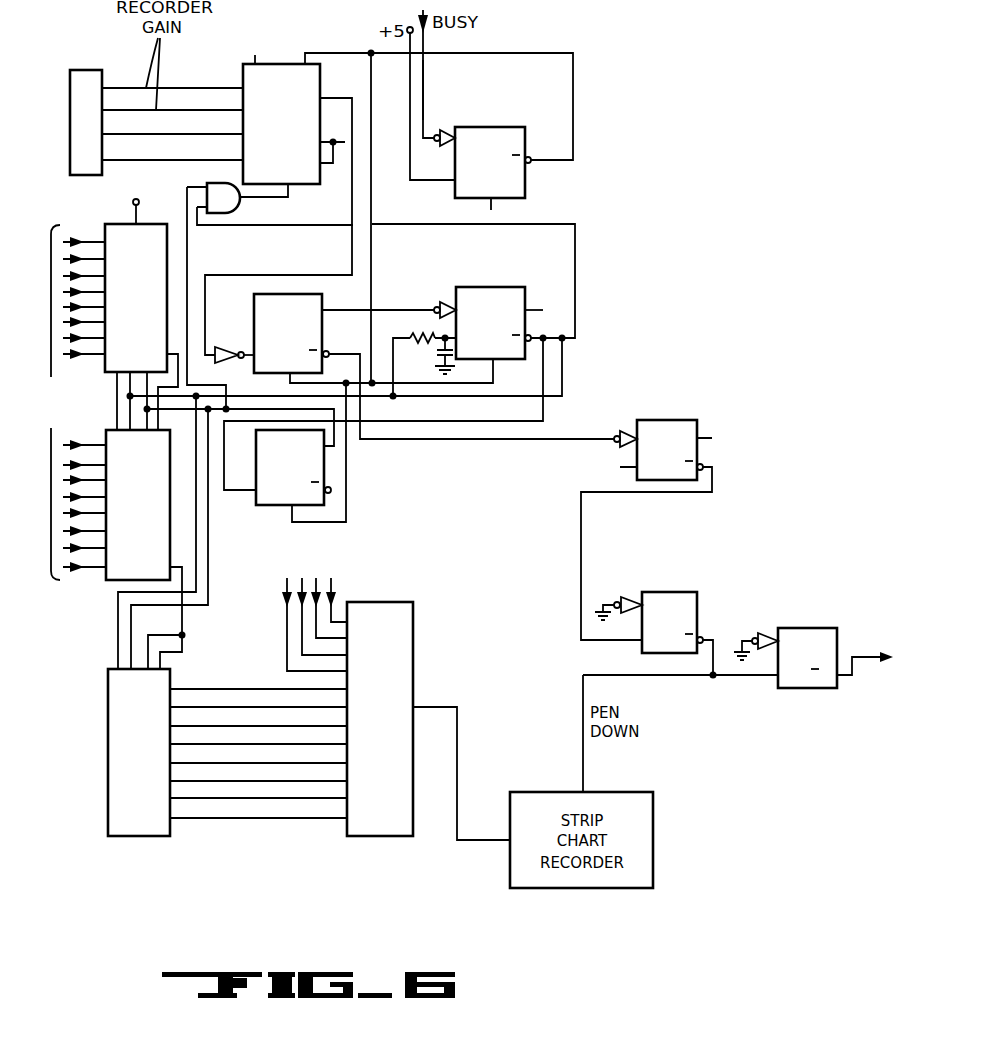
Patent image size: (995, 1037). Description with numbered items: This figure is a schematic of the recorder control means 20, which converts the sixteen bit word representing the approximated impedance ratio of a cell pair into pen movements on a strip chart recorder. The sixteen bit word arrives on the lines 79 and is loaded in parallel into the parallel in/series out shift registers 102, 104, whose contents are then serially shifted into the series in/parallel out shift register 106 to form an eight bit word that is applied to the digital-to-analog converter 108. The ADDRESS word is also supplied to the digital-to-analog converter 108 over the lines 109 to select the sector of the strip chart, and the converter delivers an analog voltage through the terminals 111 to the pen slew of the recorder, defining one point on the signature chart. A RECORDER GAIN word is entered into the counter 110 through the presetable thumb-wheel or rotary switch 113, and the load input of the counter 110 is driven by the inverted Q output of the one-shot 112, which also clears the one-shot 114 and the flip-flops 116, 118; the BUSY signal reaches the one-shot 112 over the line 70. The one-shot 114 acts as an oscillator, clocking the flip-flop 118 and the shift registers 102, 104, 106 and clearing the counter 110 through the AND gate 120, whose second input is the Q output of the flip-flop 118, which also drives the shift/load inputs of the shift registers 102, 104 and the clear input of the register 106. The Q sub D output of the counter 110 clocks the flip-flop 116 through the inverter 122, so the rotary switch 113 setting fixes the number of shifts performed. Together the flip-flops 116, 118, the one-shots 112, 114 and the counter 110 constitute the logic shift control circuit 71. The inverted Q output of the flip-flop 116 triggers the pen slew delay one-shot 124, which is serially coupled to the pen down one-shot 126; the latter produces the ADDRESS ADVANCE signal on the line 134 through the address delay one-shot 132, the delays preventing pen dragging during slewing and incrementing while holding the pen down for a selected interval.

The recorder control means 20 is at (648, 260).
The line 70 is at (423, 80).
The logic shift control circuit 71 is at (584, 239).
The lines 79 is at (50, 328).
The parallel in/series out shift register 102 is at (112, 220).
The parallel in/series out shift register 104 is at (116, 574).
The series in/parallel out shift register 106 is at (153, 838).
The digital-to-analog converter 108 is at (388, 828).
The lines 109 is at (317, 584).
The counter 110 is at (247, 71).
The terminals 111 is at (439, 702).
The one-shot 112 is at (518, 187).
The rotary switch 113 is at (86, 75).
The one-shot 114 is at (460, 297).
The flip-flop 116 is at (297, 300).
The flip-flop 118 is at (267, 506).
The AND gate 120 is at (232, 204).
The inverter 122 is at (231, 342).
The pen slew delay one-shot 124 is at (688, 432).
The pen down one-shot 126 is at (698, 591).
The address delay one-shot 132 is at (822, 628).
The line 134 is at (858, 655).